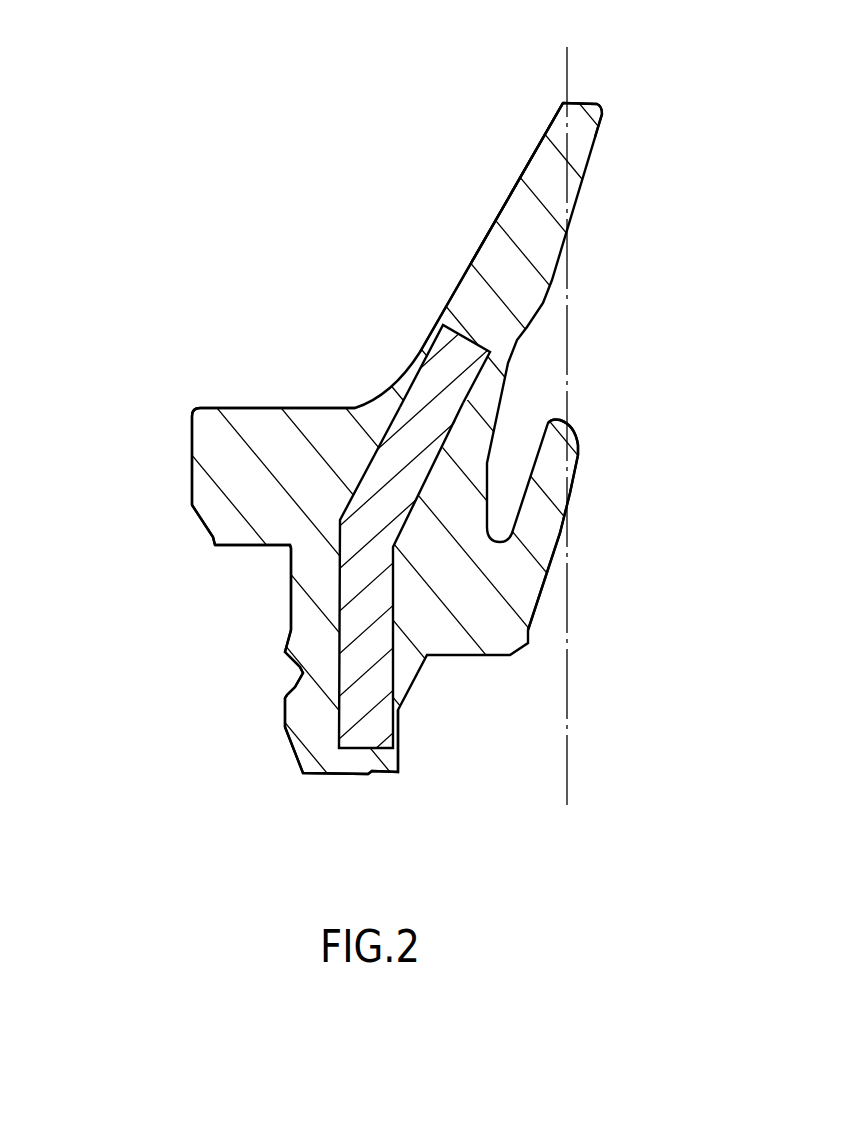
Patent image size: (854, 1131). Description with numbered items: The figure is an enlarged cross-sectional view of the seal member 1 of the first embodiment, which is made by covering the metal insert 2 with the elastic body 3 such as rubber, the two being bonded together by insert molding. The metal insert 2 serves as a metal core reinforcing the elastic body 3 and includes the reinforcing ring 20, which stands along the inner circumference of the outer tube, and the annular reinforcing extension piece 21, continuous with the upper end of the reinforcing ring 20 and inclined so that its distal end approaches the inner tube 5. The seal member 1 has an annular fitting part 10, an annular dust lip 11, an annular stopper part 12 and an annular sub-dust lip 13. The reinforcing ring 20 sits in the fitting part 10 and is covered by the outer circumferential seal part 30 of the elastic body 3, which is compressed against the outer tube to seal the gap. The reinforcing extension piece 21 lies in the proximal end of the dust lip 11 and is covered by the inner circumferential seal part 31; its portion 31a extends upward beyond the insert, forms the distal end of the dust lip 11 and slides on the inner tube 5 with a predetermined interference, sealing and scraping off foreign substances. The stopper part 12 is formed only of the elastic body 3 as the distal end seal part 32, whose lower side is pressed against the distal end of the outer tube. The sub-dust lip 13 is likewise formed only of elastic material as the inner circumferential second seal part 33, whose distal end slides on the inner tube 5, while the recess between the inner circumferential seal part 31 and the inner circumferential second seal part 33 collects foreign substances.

The seal member 1 is at (427, 477).
The metal insert 2 is at (368, 563).
The elastic body 3 is at (427, 438).
The inner tube 5 is at (567, 63).
The fitting part 10 is at (287, 716).
The dust lip 11 is at (517, 187).
The stopper part 12 is at (188, 504).
The sub-dust lip 13 is at (578, 456).
The reinforcing ring 20 is at (352, 623).
The reinforcing extension piece 21 is at (403, 377).
The outer circumferential seal part 30 is at (300, 605).
The inner circumferential seal part 31 is at (472, 283).
The portion 31a is at (595, 137).
The distal end seal part 32 is at (212, 440).
The inner circumferential second seal part 33 is at (537, 513).